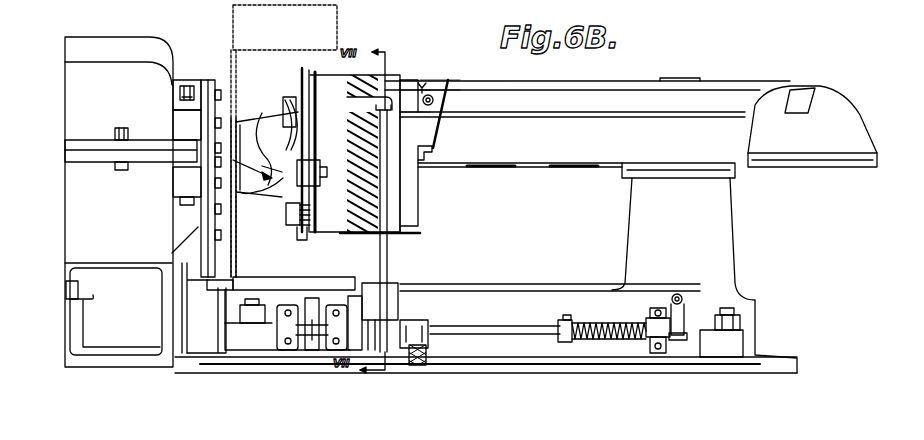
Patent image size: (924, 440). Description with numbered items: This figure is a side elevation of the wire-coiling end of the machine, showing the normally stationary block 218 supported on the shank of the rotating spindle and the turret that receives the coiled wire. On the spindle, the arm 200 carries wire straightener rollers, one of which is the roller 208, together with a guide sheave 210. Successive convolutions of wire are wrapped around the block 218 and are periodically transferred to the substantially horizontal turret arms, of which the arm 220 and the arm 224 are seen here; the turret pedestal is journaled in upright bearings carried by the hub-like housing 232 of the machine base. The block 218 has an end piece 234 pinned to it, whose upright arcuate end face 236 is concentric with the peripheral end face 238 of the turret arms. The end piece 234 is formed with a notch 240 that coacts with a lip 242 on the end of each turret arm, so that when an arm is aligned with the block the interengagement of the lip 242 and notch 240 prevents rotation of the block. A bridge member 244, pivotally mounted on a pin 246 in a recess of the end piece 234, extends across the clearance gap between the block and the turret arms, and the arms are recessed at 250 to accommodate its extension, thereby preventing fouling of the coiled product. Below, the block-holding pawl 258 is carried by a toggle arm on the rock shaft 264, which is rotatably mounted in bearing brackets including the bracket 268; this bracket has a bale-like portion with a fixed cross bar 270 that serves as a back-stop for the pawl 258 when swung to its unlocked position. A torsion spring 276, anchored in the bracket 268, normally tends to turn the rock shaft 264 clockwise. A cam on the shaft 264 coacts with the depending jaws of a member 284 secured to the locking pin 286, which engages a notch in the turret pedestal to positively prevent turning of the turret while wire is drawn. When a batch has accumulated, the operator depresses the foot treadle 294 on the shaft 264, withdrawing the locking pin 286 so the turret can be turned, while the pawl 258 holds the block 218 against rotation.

The arm 200 is at (286, 130).
The wire straightener roller 208 is at (318, 236).
The guide sheave 210 is at (277, 189).
The stationary block 218 is at (322, 85).
The turret arm 220 is at (538, 153).
The turret arm 224 is at (803, 142).
The hub-like housing 232 is at (714, 238).
The end piece 234 is at (419, 209).
The arcuate end face 236 is at (437, 133).
The peripheral end face 238 is at (445, 108).
The notch 240 is at (434, 156).
The lip 242 is at (432, 153).
The bridge member 244 is at (416, 79).
The pin 246 is at (426, 106).
The recess 250 is at (805, 100).
The block-holding pawl 258 is at (388, 243).
The rock shaft 264 is at (505, 327).
The bracket 268 is at (420, 317).
The cross bar 270 is at (405, 285).
The torsion spring 276 is at (612, 317).
The member 284 is at (718, 309).
The locking pin 286 is at (678, 294).
The foot treadle 294 is at (428, 349).